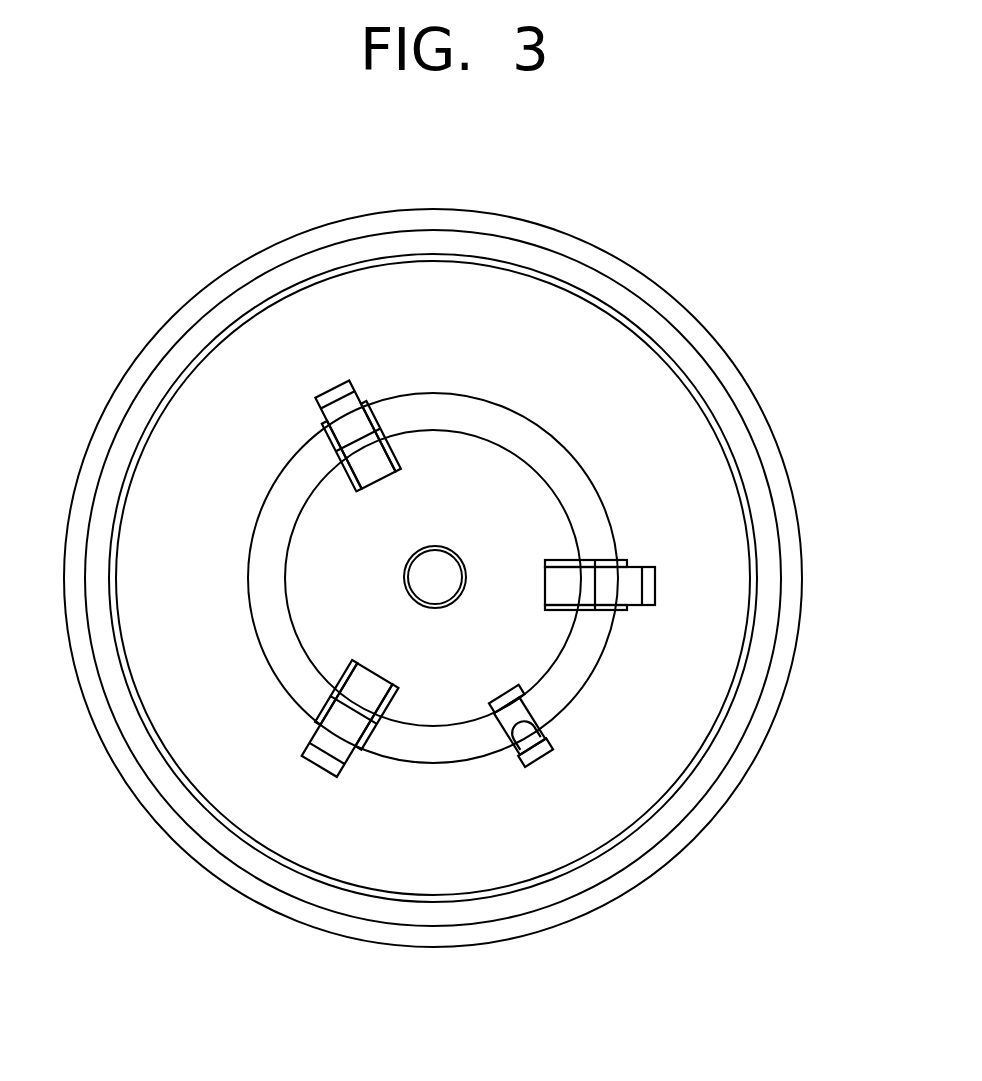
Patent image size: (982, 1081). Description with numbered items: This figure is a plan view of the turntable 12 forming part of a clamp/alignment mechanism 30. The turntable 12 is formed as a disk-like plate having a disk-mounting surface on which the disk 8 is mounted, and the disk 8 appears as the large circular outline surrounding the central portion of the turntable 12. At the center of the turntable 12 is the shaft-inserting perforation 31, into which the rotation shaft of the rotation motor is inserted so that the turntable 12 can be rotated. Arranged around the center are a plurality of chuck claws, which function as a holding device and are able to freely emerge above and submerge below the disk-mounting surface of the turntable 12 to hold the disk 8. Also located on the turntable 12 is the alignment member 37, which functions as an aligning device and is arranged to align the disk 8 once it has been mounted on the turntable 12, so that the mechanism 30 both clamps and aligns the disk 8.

The clamp/alignment mechanism 30 is at (621, 242).
The disk 8 is at (653, 397).
The turntable 12 is at (738, 772).
The shaft-inserting perforation 31 is at (432, 589).
The alignment member 37 is at (548, 703).